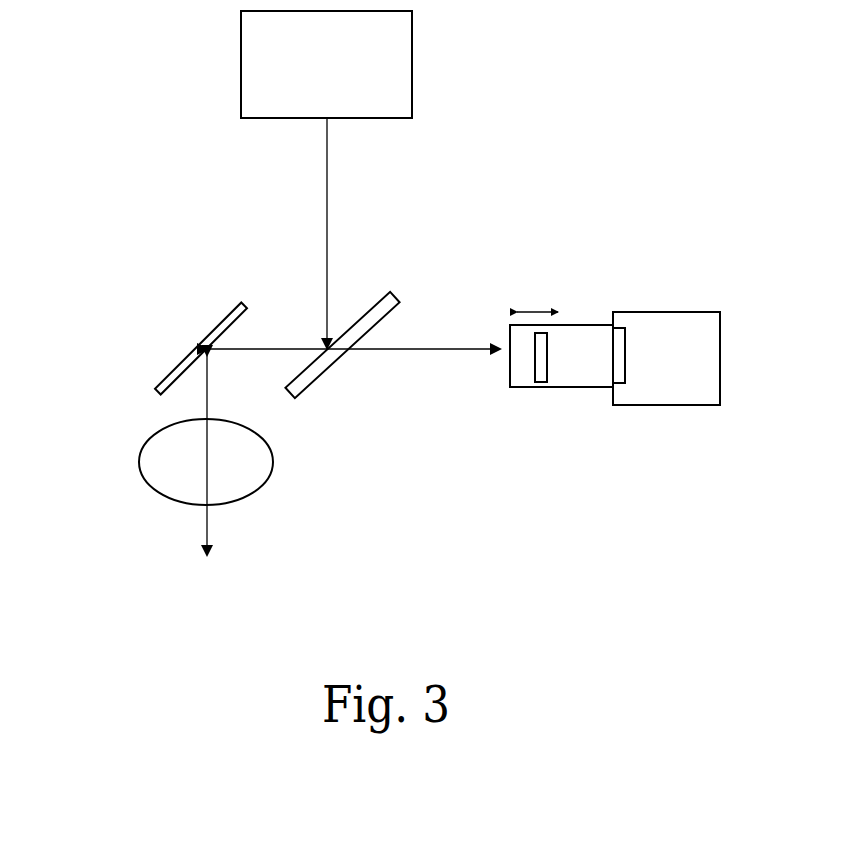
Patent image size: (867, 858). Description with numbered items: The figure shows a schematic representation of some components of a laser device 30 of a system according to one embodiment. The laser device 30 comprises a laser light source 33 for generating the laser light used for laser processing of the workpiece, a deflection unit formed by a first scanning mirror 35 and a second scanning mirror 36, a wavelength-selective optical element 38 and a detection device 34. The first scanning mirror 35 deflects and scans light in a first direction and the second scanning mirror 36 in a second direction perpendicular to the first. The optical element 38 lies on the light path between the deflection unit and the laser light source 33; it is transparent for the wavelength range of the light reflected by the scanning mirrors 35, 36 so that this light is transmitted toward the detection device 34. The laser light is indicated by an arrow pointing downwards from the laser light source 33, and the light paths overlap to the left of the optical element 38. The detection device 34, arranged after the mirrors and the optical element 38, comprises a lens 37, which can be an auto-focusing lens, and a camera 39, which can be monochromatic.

The laser device 30 is at (420, 453).
The laser light source 33 is at (407, 60).
The detection device 34 is at (615, 348).
The first scanning mirror 35 is at (140, 458).
The second scanning mirror 36 is at (224, 320).
The lens 37 is at (575, 387).
The wavelength-selective optical element 38 is at (395, 300).
The camera 39 is at (698, 405).